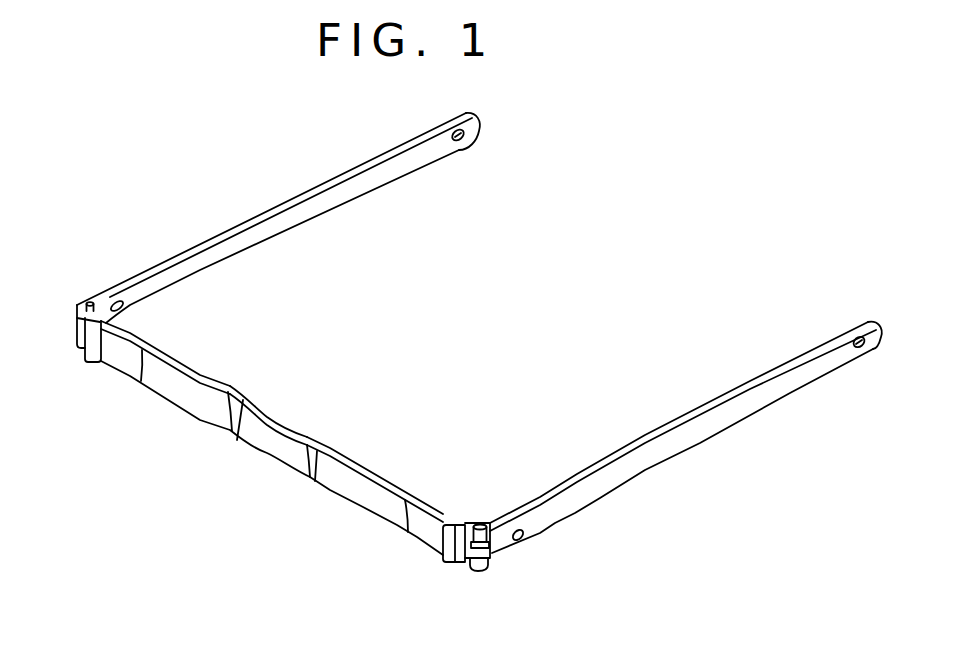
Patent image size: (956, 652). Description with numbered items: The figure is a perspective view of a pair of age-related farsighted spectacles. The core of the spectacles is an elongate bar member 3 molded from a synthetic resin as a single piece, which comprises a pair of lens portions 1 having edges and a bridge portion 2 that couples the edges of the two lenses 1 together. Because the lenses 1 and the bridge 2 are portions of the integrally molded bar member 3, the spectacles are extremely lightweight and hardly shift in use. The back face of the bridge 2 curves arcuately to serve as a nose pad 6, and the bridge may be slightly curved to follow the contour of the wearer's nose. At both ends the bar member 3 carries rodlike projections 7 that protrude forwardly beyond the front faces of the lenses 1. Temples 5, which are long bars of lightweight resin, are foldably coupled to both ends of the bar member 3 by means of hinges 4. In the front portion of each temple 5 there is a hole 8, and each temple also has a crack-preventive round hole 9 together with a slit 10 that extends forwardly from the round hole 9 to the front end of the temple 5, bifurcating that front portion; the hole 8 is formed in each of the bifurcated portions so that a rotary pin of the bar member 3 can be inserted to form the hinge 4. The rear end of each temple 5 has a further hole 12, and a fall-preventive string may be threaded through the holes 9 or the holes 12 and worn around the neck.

The lens portion 1 is at (198, 424).
The bridge portion 2 is at (272, 452).
The bar member 3 is at (138, 385).
The hinge 4 is at (78, 299).
The temple 5 is at (272, 210).
The nose pad 6 is at (290, 426).
The rodlike projection 7 is at (96, 354).
The hole 8 is at (480, 524).
The crack-preventive round hole 9 is at (525, 536).
The slit 10 is at (489, 542).
The hole 12 is at (462, 141).